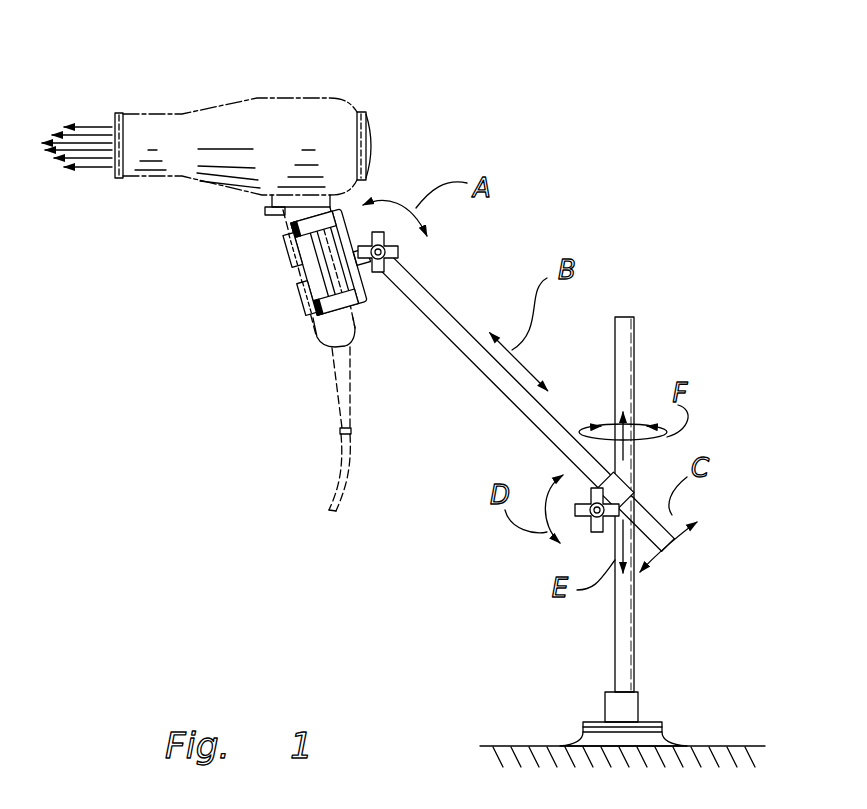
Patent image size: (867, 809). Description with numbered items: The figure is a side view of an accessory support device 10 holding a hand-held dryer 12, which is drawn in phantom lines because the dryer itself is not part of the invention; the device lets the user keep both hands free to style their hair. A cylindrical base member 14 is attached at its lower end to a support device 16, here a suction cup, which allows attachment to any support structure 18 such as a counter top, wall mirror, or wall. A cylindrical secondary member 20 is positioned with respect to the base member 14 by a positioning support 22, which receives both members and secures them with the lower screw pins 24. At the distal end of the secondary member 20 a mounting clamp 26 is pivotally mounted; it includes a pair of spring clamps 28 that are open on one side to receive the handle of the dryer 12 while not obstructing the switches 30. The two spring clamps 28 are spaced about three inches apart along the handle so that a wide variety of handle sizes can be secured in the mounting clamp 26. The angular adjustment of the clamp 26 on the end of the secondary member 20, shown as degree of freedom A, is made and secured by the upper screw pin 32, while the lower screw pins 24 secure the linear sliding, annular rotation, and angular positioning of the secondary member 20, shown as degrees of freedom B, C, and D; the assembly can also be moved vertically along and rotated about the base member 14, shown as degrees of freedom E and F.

The accessory support device 10 is at (595, 162).
The dryer 12 is at (312, 87).
The base member 14 is at (635, 340).
The support device 16 is at (655, 720).
The support structure 18 is at (717, 746).
The secondary member 20 is at (503, 392).
The positioning support 22 is at (646, 475).
The lower screw pins 24 is at (582, 524).
The mounting clamp 26 is at (380, 320).
The spring clamps 28 is at (298, 263).
The switches 30 is at (287, 250).
The upper screw pin 32 is at (398, 244).